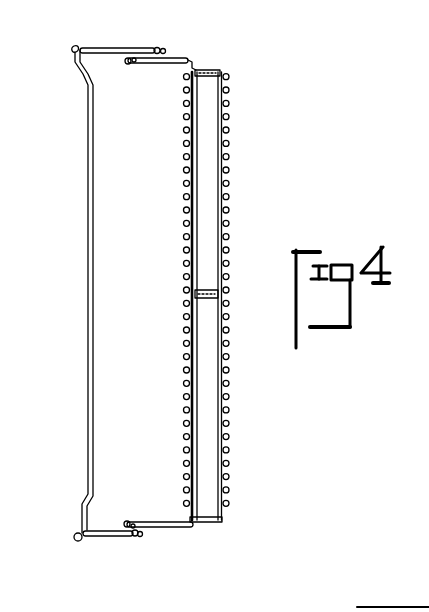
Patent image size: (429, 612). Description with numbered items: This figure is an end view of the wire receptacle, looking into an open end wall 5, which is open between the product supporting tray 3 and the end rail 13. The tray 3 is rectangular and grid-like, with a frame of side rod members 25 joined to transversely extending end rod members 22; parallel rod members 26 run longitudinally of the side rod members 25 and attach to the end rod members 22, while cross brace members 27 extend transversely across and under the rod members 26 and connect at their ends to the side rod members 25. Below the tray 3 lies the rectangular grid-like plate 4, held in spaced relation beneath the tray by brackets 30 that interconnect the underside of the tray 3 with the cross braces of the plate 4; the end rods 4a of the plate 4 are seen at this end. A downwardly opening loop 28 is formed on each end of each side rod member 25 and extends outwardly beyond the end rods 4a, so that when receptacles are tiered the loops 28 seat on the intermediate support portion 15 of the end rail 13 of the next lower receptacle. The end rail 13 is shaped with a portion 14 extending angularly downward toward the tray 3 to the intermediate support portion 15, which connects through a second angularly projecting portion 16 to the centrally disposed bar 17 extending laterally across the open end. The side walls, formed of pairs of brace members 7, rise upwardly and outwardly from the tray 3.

The product supporting tray 3 is at (180, 210).
The grid-like plate 4 is at (229, 423).
The end rod 4a is at (231, 88).
The end wall 5 is at (140, 152).
The brace member 7 is at (172, 528).
The end rail 13 is at (86, 353).
The angularly extending portion 14 is at (78, 538).
The intermediate support portion 15 is at (85, 510).
The second angularly projecting portion 16 is at (91, 491).
The centrally disposed bar 17 is at (91, 440).
The end rod member 22 is at (186, 318).
The side rod member 25 is at (198, 522).
The rod member 26 is at (186, 412).
The cross brace member 27 is at (98, 91).
The downwardly opening loop 28 is at (194, 522).
The bracket 30 is at (214, 70).